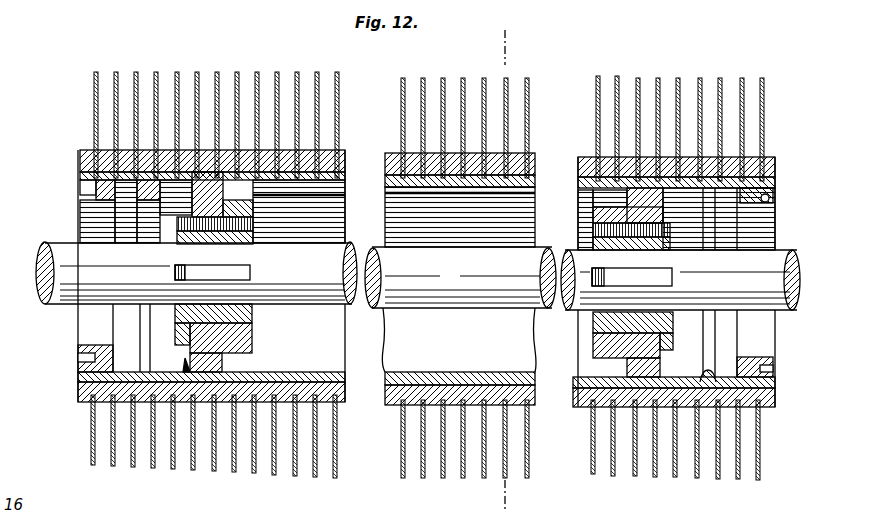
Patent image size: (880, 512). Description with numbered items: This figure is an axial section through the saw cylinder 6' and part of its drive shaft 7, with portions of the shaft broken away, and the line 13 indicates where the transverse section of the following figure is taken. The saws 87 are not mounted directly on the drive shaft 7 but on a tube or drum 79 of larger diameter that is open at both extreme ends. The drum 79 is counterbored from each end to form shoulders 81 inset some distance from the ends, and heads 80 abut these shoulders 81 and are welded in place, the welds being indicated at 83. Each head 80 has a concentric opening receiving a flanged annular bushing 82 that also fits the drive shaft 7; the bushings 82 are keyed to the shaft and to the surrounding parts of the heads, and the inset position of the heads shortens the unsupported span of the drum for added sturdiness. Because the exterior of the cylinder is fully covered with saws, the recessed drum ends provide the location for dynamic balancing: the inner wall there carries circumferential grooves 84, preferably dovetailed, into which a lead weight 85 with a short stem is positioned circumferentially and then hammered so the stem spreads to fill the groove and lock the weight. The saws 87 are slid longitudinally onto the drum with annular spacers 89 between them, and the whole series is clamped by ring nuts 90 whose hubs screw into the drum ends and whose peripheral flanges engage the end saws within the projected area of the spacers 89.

The drive shaft 7 is at (515, 258).
The section line 13 is at (490, 50).
The saw cylinder 6' is at (676, 223).
The drum 79 is at (385, 392).
The heads 80 is at (250, 342).
The shoulders 81 is at (236, 364).
The flanged annular bushings 82 is at (255, 240).
The weld 83 is at (178, 362).
The circumferential grooves 84 is at (148, 328).
The lead weight 85 is at (80, 210).
The saws 87 is at (322, 470).
The annular spacers 89 is at (288, 368).
The ring nuts 90 is at (80, 160).